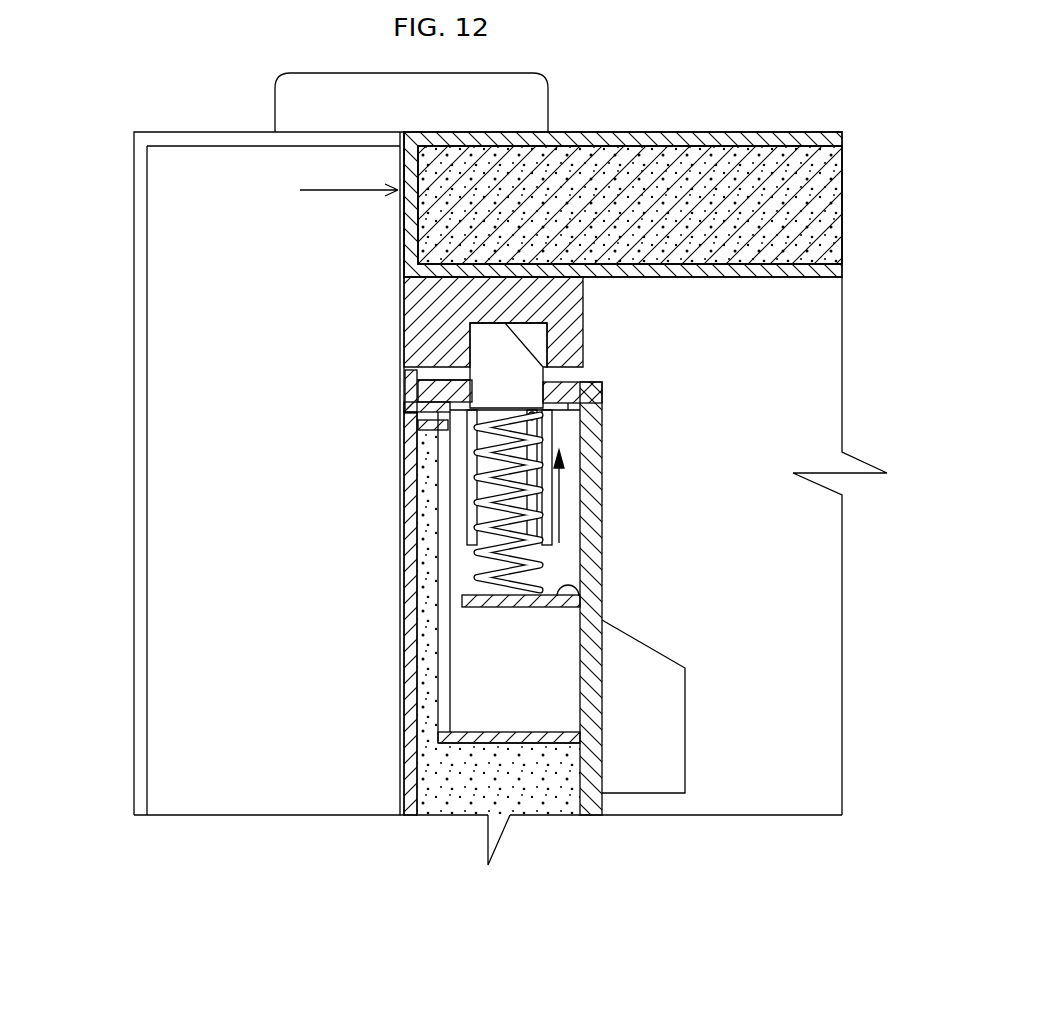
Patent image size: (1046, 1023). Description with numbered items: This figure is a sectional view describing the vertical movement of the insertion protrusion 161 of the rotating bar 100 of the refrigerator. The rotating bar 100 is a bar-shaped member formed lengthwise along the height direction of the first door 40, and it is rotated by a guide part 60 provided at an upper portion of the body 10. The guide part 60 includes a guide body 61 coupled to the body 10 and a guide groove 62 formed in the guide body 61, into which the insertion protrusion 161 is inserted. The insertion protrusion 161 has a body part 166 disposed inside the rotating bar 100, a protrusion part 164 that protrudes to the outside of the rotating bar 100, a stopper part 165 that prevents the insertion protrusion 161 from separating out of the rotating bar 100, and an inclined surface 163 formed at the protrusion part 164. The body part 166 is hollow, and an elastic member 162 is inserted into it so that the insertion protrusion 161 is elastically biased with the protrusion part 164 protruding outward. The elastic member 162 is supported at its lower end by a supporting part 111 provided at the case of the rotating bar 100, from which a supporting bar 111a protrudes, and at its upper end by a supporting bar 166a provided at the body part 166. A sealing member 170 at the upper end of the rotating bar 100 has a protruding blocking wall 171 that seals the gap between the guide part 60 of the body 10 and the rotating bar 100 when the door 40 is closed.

The body 10 is at (700, 160).
The first door 40 is at (178, 300).
The guide part 60 is at (564, 342).
The guide body 61 is at (583, 293).
The guide groove 62 is at (545, 333).
The rotating bar 100 is at (608, 758).
The supporting part 111 is at (590, 600).
The supporting bar 111a is at (570, 586).
The insertion protrusion 161 is at (585, 450).
The elastic member 162 is at (548, 557).
The inclined surface 163 is at (548, 372).
The protrusion part 164 is at (530, 392).
The stopper part 165 is at (548, 428).
The body part 166 is at (553, 440).
The supporting bar 166a is at (565, 470).
The sealing member 170 is at (400, 402).
The blocking wall 171 is at (400, 378).